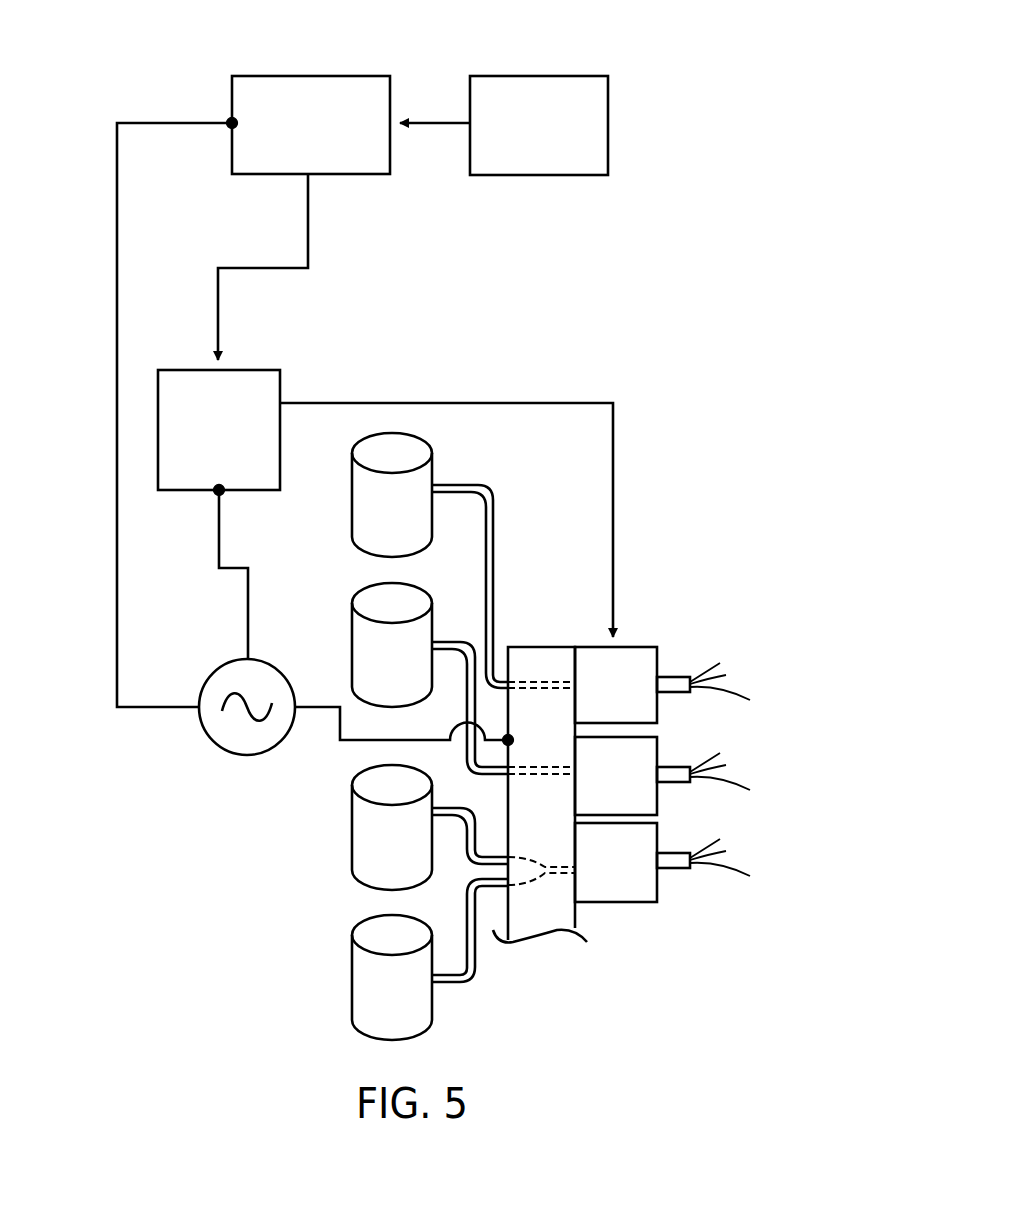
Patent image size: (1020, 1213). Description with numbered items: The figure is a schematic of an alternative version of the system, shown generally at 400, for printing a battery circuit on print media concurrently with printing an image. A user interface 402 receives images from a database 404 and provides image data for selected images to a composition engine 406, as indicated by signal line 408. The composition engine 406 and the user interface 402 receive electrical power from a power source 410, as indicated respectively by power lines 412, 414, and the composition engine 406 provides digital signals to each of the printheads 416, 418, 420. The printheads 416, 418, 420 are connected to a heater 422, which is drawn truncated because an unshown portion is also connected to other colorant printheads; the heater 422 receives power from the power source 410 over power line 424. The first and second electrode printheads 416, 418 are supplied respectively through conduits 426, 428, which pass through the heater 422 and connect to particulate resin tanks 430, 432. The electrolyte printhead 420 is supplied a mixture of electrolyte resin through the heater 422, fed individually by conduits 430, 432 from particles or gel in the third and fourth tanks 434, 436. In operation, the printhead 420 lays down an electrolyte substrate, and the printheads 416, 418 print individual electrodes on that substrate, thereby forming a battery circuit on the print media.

The system 400 is at (732, 74).
The user interface 402 is at (310, 76).
The database 404 is at (538, 76).
The composition engine 406 is at (250, 370).
The signal line 408 is at (308, 238).
The power source 410 is at (248, 755).
The power line 412 is at (248, 612).
The power line 414 is at (117, 387).
The printhead 416 is at (638, 647).
The printhead 418 is at (658, 749).
The printhead 420 is at (658, 835).
The heater 422 is at (521, 647).
The power line 424 is at (340, 743).
The conduit 426 is at (493, 537).
The conduit 428 is at (450, 637).
The particulate resin tank 430 is at (350, 502).
The particulate resin tank 432 is at (350, 647).
The tank 434 is at (350, 828).
The tank 436 is at (350, 983).